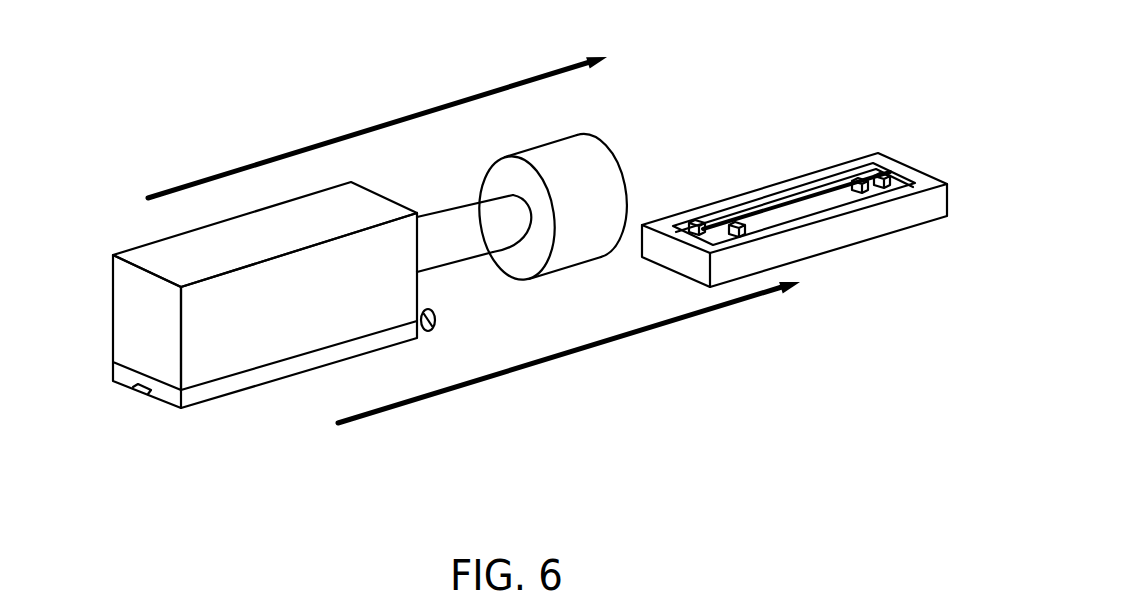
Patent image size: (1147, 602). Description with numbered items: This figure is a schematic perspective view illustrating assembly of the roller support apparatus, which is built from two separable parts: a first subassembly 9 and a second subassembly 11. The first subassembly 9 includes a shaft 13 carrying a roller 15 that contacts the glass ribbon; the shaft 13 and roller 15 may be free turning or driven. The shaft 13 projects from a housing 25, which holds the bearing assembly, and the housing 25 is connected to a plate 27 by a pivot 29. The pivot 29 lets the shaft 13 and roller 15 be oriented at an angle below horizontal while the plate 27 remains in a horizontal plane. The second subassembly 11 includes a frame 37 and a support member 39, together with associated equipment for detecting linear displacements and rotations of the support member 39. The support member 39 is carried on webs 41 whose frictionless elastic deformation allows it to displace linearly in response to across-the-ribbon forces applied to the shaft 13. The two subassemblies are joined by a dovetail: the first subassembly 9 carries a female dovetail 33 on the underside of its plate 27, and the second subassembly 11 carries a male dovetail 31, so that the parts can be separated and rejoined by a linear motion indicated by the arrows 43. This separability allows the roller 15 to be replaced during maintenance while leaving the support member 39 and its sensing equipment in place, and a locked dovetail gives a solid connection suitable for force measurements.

The first subassembly of support assembly 9 is at (208, 486).
The second subassembly of support assembly 11 is at (860, 48).
The shaft 13 is at (478, 233).
The roller 15 is at (584, 160).
The housing 25 is at (357, 198).
The plate 27 is at (240, 378).
The pivot 29 is at (437, 325).
The male portion of dovetail 31 is at (805, 188).
The female portion of dovetail 33 is at (141, 392).
The frame 37 is at (683, 262).
The support member 39 is at (800, 210).
The web 41 is at (710, 227).
The arrows illustrating assembly of first and second subassemblies 43 is at (368, 124).